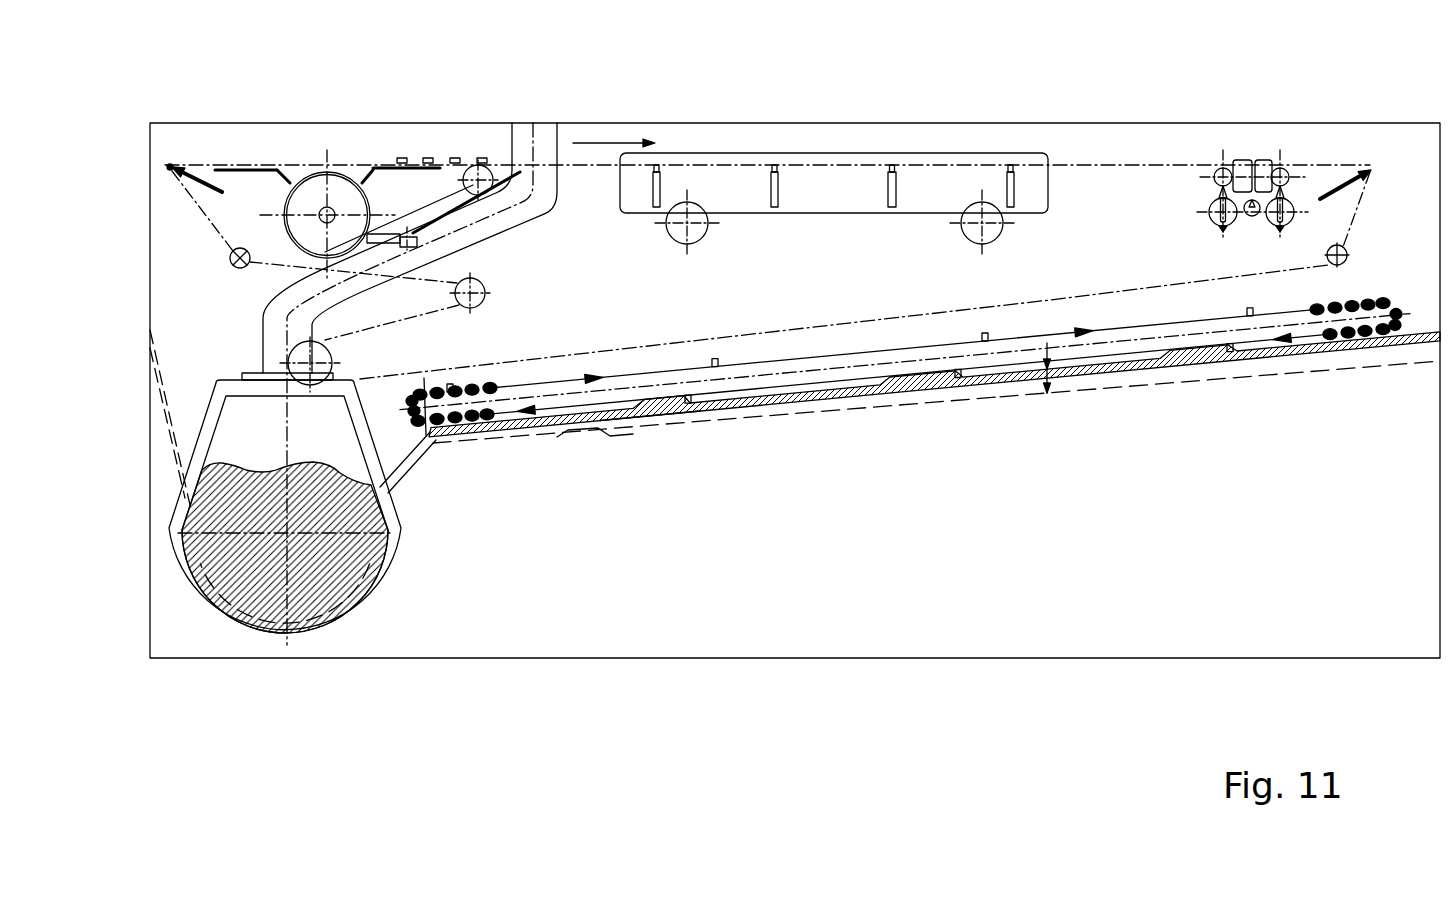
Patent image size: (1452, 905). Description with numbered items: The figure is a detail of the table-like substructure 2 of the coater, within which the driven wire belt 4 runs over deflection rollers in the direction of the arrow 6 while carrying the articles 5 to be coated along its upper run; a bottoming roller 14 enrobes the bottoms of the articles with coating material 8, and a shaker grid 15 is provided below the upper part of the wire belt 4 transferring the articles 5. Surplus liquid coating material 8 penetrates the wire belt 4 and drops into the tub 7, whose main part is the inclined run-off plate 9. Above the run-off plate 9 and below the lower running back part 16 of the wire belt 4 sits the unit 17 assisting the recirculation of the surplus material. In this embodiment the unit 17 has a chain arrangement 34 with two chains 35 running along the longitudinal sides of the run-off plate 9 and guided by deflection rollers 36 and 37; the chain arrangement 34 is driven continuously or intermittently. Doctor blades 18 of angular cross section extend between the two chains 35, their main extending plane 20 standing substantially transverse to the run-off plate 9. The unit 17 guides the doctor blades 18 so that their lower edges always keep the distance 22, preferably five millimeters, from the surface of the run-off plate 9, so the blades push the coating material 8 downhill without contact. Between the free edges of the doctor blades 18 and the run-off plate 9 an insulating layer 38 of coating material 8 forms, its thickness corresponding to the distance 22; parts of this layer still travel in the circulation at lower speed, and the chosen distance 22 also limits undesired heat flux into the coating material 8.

The substructure 2 is at (1285, 110).
The wire belt 4 is at (1136, 164).
The articles 5 is at (401, 157).
The arrow 6 is at (607, 143).
The tub 7 is at (500, 447).
The liquid coating material 8 is at (320, 568).
The run-off plate 9 is at (637, 420).
The bottoming roller 14 is at (359, 138).
The shaker grid 15 is at (830, 130).
The lower running back part of the wire belt 16 is at (1168, 284).
The unit assisting the recirculation of surplus coating material 17 is at (1077, 272).
The doctor blades 18 is at (997, 343).
The main extending plane 20 is at (948, 392).
The distance 22 is at (1058, 395).
The chain arrangement 34 is at (926, 336).
The chains 35 is at (899, 375).
The deflection roller 36 is at (428, 436).
The deflection roller 37 is at (1380, 292).
The insulating layer 38 is at (740, 407).